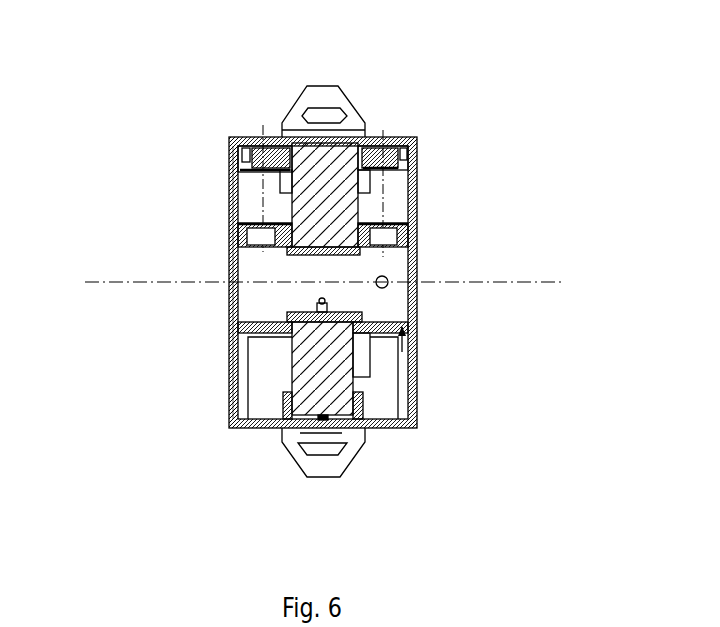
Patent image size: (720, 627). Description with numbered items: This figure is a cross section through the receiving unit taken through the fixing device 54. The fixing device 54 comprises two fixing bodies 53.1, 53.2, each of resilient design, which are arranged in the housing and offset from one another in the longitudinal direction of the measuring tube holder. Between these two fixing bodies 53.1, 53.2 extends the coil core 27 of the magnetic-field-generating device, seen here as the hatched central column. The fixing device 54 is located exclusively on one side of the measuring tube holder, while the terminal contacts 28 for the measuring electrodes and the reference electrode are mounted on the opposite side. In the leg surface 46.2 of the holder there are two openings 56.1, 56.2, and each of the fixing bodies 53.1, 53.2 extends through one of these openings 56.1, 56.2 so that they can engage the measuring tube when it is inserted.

The fixing device 54 is at (235, 135).
The leg surface 46.2 is at (233, 235).
The coil core 27 is at (327, 187).
The fixing body 53.1 is at (238, 167).
The fixing body 53.2 is at (395, 190).
The opening 56.1 is at (245, 240).
The opening 56.2 is at (402, 242).
The terminal contacts 28 is at (325, 303).